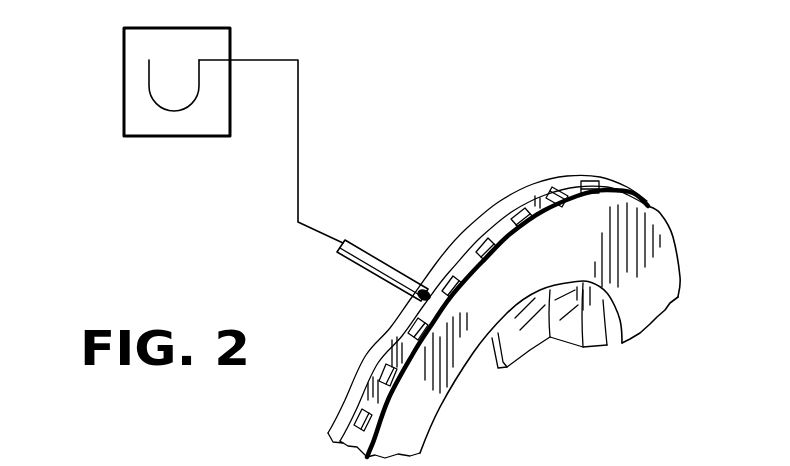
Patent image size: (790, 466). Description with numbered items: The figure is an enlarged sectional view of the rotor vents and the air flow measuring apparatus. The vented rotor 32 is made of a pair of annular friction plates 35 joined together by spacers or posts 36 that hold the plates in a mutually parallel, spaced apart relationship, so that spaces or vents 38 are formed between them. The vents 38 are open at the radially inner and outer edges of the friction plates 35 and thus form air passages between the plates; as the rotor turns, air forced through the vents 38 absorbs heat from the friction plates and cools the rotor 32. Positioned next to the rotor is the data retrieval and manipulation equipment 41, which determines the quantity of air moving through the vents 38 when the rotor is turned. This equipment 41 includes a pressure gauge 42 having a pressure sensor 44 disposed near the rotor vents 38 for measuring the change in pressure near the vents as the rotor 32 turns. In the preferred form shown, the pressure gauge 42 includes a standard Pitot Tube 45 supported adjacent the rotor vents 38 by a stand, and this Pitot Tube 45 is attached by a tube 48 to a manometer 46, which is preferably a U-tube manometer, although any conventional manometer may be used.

The vented rotor 32 is at (662, 195).
The annular friction plates 35 is at (597, 190).
The spacers or posts 36 is at (526, 212).
The vents 38 is at (463, 262).
The data retrieval and manipulation equipment 41 is at (395, 50).
The pressure gauge 42 is at (124, 60).
The pressure sensor 44 is at (387, 262).
The Pitot Tube 45 is at (347, 270).
The manometer 46 is at (160, 108).
The tube 48 is at (298, 155).